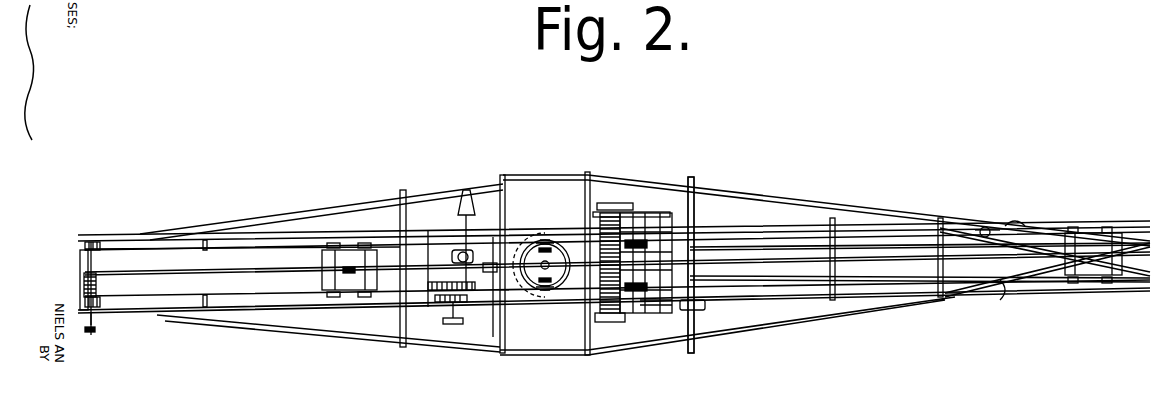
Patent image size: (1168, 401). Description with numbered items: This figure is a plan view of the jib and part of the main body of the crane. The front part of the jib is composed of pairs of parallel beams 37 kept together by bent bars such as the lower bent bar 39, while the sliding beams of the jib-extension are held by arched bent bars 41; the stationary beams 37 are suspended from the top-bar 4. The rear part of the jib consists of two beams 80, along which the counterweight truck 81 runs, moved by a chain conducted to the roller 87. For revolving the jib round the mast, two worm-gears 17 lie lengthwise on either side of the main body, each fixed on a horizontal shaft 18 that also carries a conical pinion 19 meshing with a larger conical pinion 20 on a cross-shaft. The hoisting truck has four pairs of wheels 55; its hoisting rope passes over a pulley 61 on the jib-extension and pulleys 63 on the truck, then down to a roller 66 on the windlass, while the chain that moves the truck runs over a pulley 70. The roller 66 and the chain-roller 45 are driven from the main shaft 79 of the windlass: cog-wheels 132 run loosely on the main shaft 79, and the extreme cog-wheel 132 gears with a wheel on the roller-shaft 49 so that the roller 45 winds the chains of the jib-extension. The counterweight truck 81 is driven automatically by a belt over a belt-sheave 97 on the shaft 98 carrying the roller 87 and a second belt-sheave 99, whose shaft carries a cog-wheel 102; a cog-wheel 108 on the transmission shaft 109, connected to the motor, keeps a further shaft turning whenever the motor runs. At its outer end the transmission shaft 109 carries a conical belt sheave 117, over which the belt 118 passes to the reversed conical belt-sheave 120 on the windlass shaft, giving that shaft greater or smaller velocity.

The top-bar 4 is at (545, 287).
The worm-gear 17 is at (555, 244).
The horizontal shaft 18 is at (589, 215).
The conical pinion 19 is at (507, 240).
The conical pinion 20 is at (495, 238).
The parallel beam 37 is at (1010, 224).
The lower bent bar 39 is at (833, 220).
The arched bent bar 41 is at (941, 222).
The chain-roller 45 is at (612, 225).
The roller-shaft 49 is at (606, 322).
The wheels 55 is at (1106, 227).
The pulley 61 is at (955, 297).
The pulley 63 is at (1062, 265).
The roller 66 is at (657, 258).
The pulley 70 is at (985, 227).
The main shaft 79 is at (645, 212).
The beam 80 is at (185, 238).
The truck 81 is at (368, 280).
The roller 87 is at (97, 288).
The belt-sheave 97 is at (91, 335).
The shaft 98 is at (95, 325).
The belt-sheave 99 is at (462, 325).
The cog-wheel 102 is at (455, 296).
The cog-wheel 108 is at (462, 325).
The transmission shaft 109 is at (462, 216).
The conical belt sheave 117 is at (464, 200).
The belt 118 is at (545, 242).
The conical belt-sheave 120 is at (632, 210).
The cog-wheel 132 is at (660, 245).